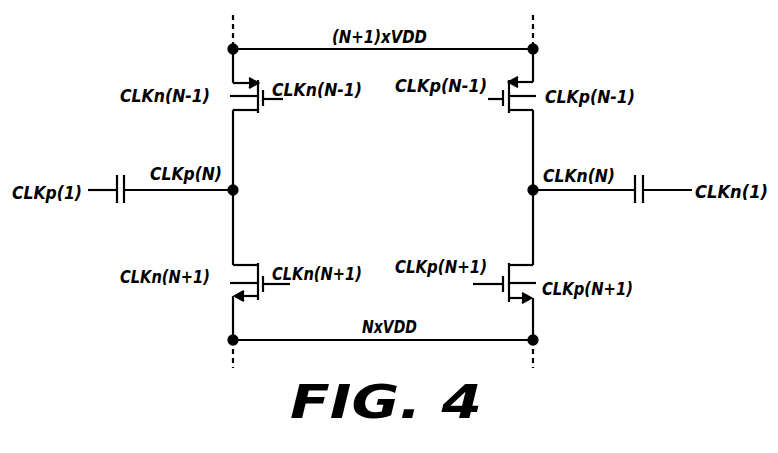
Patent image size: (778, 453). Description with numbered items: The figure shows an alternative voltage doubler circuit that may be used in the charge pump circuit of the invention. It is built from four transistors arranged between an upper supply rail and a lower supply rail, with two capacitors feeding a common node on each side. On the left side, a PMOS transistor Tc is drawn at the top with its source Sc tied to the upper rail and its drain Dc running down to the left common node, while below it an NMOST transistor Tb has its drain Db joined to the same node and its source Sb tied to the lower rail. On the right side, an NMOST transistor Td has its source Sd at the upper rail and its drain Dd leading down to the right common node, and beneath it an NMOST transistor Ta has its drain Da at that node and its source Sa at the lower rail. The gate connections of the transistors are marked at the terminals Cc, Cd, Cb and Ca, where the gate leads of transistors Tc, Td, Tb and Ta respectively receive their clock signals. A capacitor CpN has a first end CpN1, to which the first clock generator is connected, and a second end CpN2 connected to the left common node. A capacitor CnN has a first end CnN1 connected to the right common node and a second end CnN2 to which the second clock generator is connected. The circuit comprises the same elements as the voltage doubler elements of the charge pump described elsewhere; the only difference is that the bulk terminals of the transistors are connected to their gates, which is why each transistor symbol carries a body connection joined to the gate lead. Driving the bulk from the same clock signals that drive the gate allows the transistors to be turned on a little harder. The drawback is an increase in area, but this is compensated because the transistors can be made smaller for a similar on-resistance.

The source Sc is at (233, 56).
The source Sd is at (533, 56).
The source Sb is at (233, 328).
The source Sa is at (533, 328).
The PMOS Tc is at (237, 92).
The NMOST Td is at (528, 90).
The NMOST Tb is at (237, 279).
The NMOST Ta is at (528, 281).
The gate terminal Cc is at (283, 99).
The gate terminal Cd is at (488, 99).
The gate terminal Cb is at (290, 284).
The gate terminal Ca is at (473, 284).
The drain Dc is at (233, 143).
The drain Db is at (233, 222).
The drain Dd is at (533, 143).
The drain Da is at (533, 222).
The capacitor CpN is at (125, 175).
The first end CpN1 is at (98, 191).
The second end CpN2 is at (152, 191).
The capacitor CnN is at (641, 178).
The first end CnN1 is at (617, 191).
The second end CnN2 is at (672, 191).